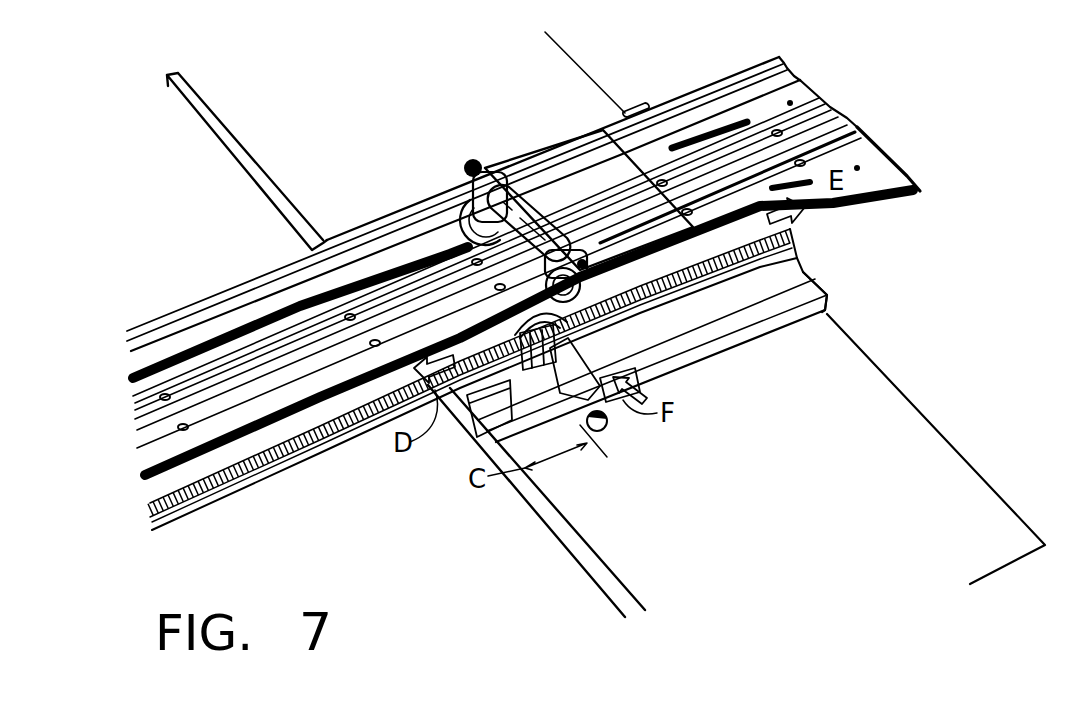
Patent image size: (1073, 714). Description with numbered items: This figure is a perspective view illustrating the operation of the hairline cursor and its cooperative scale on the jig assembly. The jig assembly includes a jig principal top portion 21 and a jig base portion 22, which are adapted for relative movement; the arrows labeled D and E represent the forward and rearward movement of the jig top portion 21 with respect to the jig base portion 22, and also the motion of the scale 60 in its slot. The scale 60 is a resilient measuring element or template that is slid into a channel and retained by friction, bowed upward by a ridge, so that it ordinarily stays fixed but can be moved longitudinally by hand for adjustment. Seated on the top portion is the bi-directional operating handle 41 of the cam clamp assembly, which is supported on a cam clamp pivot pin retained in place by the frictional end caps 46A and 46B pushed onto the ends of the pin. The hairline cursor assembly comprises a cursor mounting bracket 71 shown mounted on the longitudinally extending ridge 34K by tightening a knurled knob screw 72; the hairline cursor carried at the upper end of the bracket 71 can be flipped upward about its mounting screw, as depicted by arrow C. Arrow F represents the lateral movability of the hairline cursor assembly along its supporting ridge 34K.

The jig principal top portion 21 is at (801, 88).
The jig base portion 22 is at (800, 287).
The longitudinally extending ridge 34K is at (827, 295).
The bi-directional operating handle 41 is at (608, 209).
The frictional end cap 46A is at (470, 159).
The frictional end cap 46B is at (598, 286).
The scale 60 is at (276, 468).
The cursor mounting bracket 71 is at (551, 413).
The knurled knob screw 72 is at (605, 432).